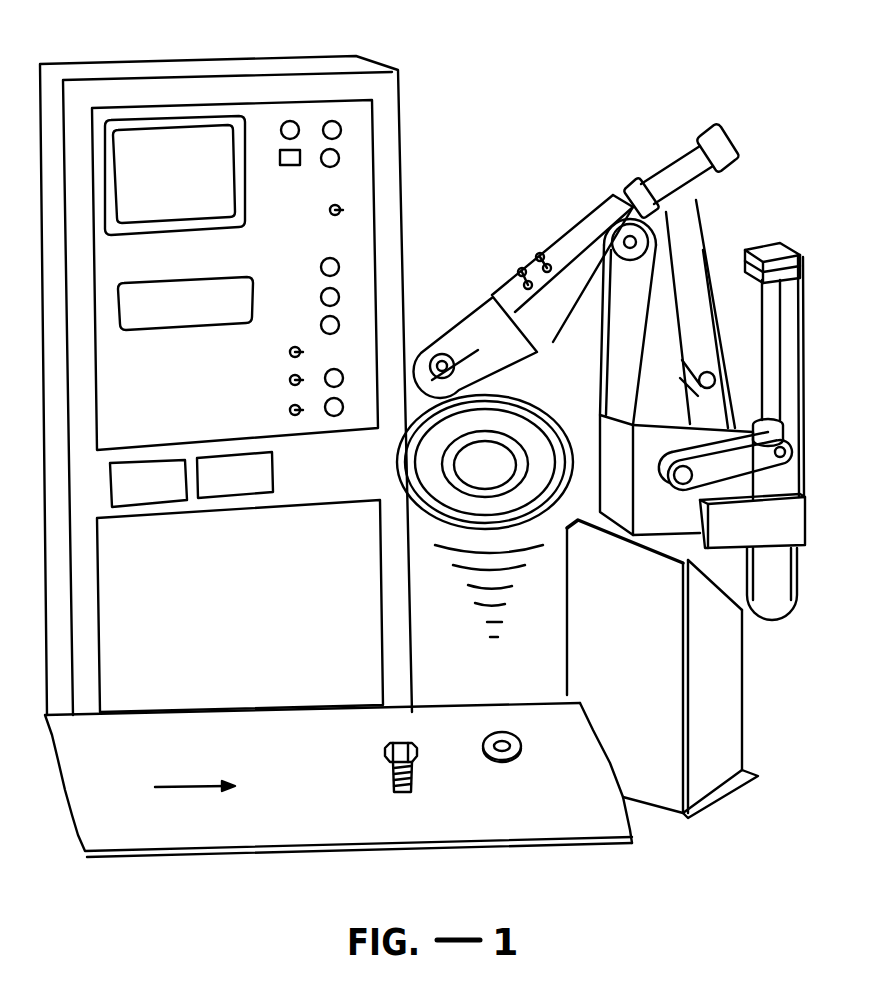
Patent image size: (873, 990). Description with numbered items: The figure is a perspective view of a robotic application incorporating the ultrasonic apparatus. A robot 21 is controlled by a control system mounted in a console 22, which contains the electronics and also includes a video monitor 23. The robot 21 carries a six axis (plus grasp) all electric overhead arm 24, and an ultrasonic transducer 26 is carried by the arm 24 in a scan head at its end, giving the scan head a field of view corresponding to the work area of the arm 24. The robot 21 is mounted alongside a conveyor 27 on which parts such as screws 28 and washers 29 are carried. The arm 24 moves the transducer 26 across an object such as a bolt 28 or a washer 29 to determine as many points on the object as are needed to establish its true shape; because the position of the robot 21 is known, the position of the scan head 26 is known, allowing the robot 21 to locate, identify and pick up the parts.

The robot 21 is at (590, 192).
The console 22 is at (405, 103).
The video monitor 23 is at (205, 140).
The overhead arm 24 is at (564, 242).
The ultrasonic transducer 26 is at (537, 402).
The conveyor 27 is at (470, 836).
The screw 28 is at (410, 744).
The washer 29 is at (502, 732).